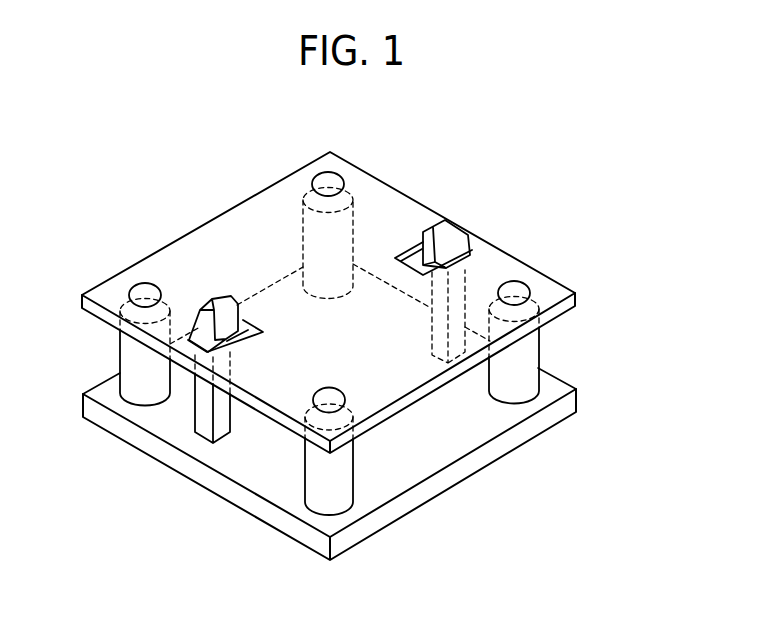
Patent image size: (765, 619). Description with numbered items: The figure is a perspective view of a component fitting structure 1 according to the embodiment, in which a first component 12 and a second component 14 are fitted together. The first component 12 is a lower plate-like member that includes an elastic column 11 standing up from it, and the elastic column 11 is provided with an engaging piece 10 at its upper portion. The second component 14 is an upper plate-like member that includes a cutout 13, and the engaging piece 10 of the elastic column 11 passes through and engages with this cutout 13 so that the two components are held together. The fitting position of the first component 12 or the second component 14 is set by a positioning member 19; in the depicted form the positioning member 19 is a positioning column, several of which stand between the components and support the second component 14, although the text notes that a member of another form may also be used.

The component fitting structure 1 is at (642, 169).
The engaging piece 10 is at (447, 240).
The elastic column 11 is at (463, 280).
The first component 12 is at (252, 472).
The cutout 13 is at (418, 242).
The second component 14 is at (178, 255).
The positioning member 19 is at (305, 228).